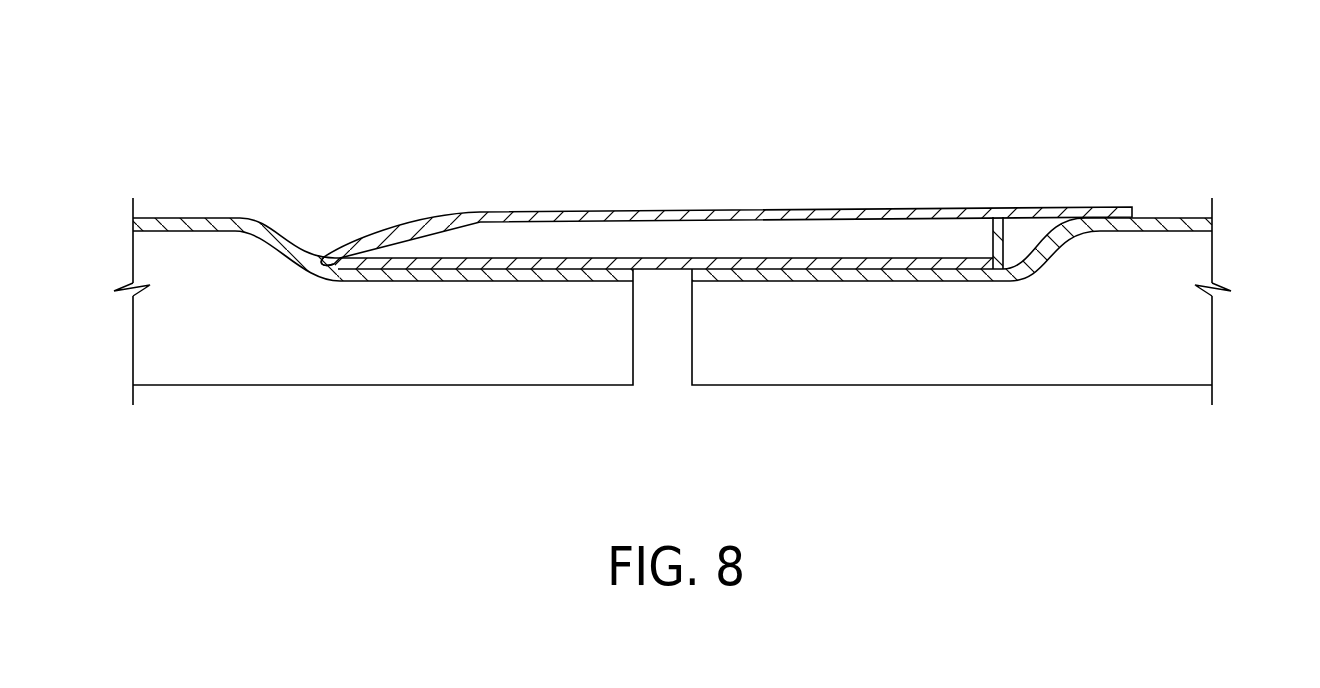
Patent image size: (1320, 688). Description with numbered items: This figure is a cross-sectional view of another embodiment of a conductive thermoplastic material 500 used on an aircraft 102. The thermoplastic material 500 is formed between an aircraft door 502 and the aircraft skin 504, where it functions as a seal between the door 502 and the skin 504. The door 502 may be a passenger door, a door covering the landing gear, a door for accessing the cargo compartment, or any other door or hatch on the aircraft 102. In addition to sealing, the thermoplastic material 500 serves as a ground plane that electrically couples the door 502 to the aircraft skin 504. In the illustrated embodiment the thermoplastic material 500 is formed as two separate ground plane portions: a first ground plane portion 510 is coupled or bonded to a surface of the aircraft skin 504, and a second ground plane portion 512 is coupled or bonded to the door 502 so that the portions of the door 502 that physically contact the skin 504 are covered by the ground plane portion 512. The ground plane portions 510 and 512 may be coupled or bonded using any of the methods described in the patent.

The aircraft 102 is at (142, 146).
The thermoplastic material 500 is at (312, 228).
The aircraft door 502 is at (1245, 210).
The aircraft skin 504 is at (553, 352).
The first ground plane portion 510 is at (362, 277).
The second ground plane portion 512 is at (500, 218).